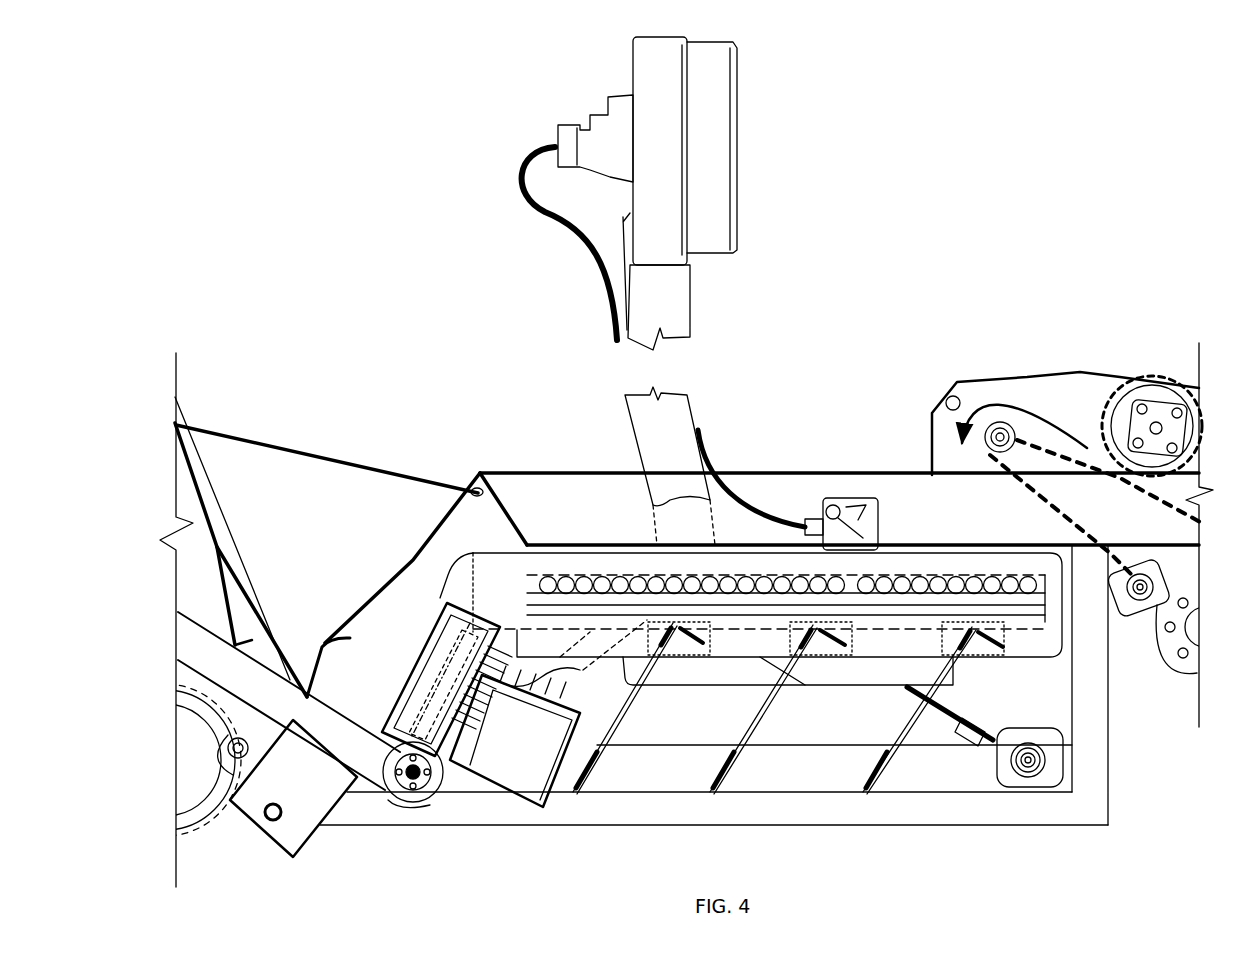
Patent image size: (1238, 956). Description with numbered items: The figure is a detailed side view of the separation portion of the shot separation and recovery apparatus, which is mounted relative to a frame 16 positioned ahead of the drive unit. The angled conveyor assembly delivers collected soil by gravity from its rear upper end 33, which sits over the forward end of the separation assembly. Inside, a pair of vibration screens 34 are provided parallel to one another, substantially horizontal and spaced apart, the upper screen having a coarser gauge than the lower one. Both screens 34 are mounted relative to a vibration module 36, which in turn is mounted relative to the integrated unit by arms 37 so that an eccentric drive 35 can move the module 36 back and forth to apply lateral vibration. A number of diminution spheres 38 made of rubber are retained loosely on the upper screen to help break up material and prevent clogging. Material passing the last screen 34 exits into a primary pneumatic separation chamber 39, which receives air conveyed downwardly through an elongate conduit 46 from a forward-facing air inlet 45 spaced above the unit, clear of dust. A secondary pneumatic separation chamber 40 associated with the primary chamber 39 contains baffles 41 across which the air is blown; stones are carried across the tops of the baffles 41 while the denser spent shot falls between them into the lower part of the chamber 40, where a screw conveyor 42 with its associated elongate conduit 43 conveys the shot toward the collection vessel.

The frame 16 is at (540, 490).
The rear upper end of the conveyor assembly 33 is at (1013, 363).
The vibration screens 34 is at (1045, 593).
The eccentric drive 35 is at (1052, 782).
The vibration module 36 is at (717, 675).
The arms 37 is at (767, 727).
The diminution spheres 38 is at (912, 577).
The primary pneumatic separation chamber 39 is at (537, 753).
The secondary pneumatic separation chamber 40 is at (455, 605).
The baffles 41 is at (448, 658).
The screw conveyor 42 is at (408, 798).
The elongate conduit 43 is at (302, 718).
The air inlet 45 is at (745, 140).
The elongate conduit 46 is at (667, 423).